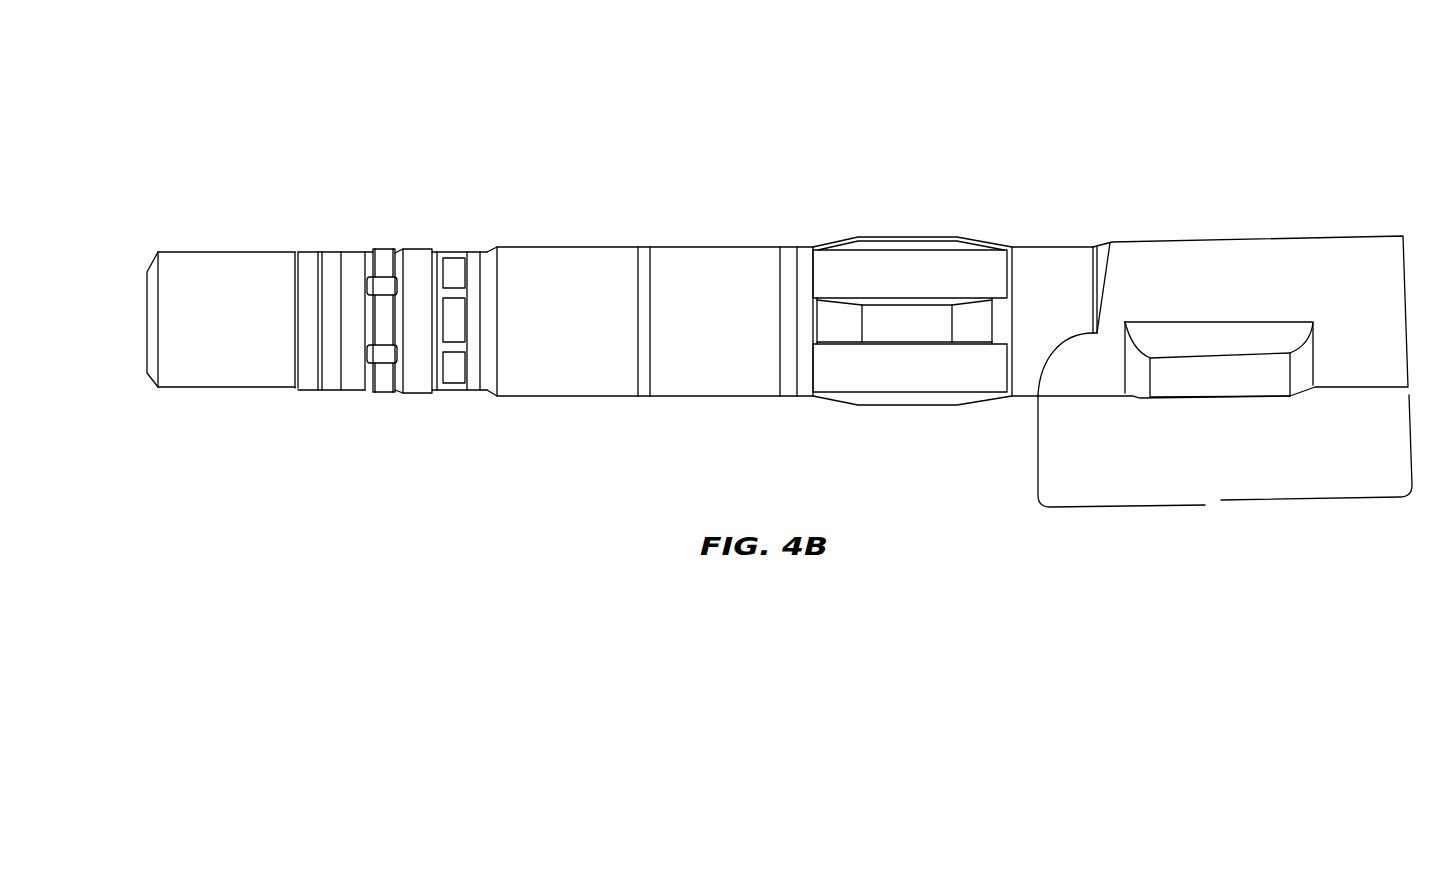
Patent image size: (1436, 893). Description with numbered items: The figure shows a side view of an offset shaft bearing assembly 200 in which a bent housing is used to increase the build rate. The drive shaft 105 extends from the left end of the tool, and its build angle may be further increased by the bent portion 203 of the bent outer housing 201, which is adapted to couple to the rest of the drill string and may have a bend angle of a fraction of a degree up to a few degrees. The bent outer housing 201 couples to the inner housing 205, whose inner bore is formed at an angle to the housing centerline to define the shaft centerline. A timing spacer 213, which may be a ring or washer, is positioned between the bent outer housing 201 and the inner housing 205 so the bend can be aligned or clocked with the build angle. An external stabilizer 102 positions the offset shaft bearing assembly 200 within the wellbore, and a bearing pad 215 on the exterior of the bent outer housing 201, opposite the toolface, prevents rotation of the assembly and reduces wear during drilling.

The offset shaft bearing assembly 200 is at (336, 106).
The drive shaft 105 is at (265, 377).
The inner housing 205 is at (655, 287).
The timing spacer 213 is at (645, 247).
The external stabilizer 102 is at (902, 400).
The bent outer housing 201 is at (1040, 245).
The bent portion 203 is at (1232, 240).
The bearing pad 215 is at (1162, 393).